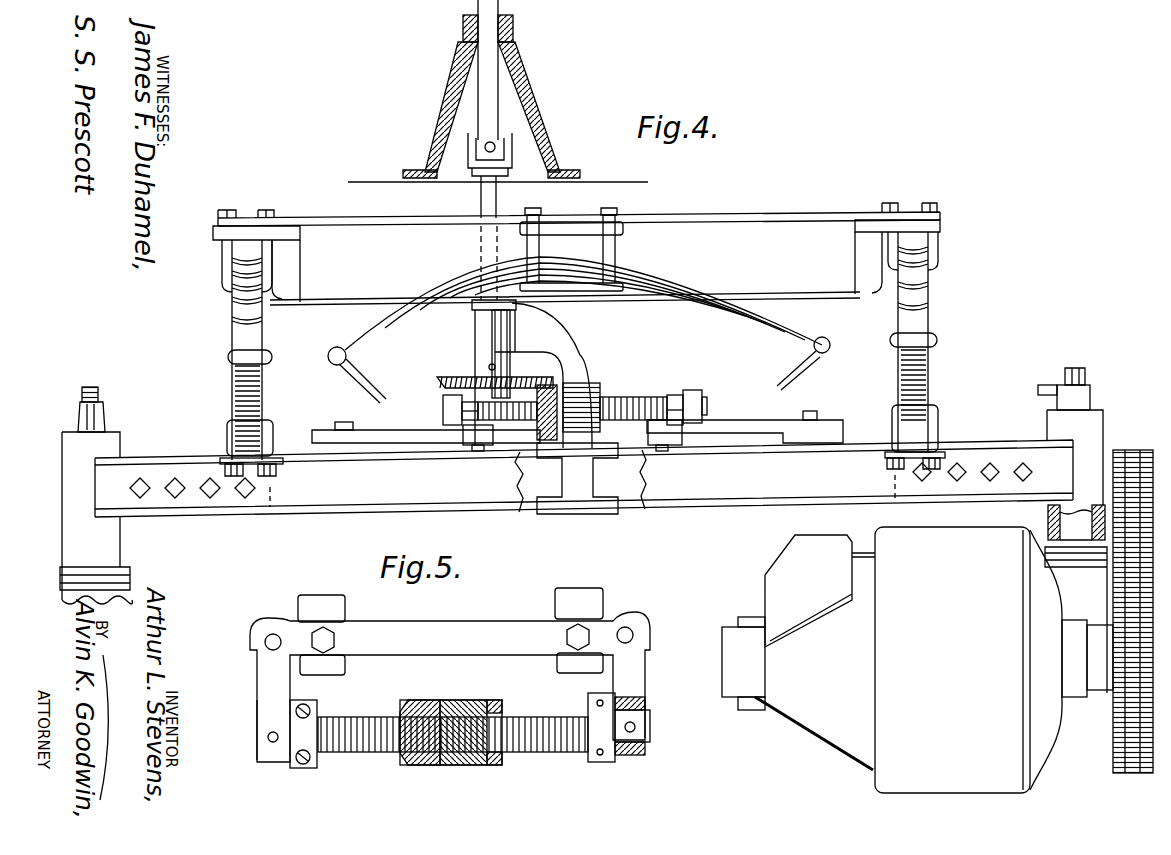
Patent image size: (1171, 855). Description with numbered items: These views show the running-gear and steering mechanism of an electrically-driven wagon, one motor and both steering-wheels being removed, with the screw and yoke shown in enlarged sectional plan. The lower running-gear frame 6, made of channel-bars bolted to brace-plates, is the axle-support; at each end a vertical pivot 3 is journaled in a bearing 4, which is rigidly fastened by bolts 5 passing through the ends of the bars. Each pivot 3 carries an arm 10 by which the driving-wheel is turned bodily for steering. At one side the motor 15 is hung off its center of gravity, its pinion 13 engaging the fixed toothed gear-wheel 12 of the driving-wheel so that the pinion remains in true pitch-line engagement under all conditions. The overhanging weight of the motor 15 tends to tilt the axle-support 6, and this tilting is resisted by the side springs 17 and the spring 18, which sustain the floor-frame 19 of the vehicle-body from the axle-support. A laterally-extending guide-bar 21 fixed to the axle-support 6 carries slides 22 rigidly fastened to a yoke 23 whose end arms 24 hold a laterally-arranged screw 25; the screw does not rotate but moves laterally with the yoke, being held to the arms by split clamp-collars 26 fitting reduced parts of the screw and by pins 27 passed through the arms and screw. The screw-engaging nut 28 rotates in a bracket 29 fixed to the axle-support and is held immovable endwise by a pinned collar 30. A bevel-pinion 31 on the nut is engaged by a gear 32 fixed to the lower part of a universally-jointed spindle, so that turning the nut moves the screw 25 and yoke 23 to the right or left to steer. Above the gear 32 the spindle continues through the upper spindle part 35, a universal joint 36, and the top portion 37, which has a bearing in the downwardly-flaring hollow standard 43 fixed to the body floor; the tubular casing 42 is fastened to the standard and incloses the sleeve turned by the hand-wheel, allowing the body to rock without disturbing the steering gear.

In FIG. 4, the vertical pivot 3 is at (79, 418).
In FIG. 4, the bearing 4 is at (62, 532).
In FIG. 4, the bolts 5 is at (240, 492).
In FIG. 4, the lower running-gear frame 6 is at (584, 478).
In FIG. 4, the arm 10 is at (1064, 388).
In FIG. 4, the toothed gear-wheel 12 is at (1133, 599).
In FIG. 4, the pinion 13 is at (1127, 673).
In FIG. 4, the motor 15 is at (872, 772).
In FIG. 4, the side springs 17 is at (233, 334).
In FIG. 4, the spring 18 is at (664, 272).
In FIG. 4, the floor-frame 19 is at (382, 236).
In FIG. 4, the guide-bar 21 is at (734, 427).
In FIG. 4, the slides 22 is at (483, 432).
In FIG. 5, the slides 22 is at (313, 600).
In FIG. 5, the yoke 23 is at (497, 630).
In FIG. 4, the end arms 24 is at (447, 403).
In FIG. 5, the end arms 24 is at (265, 685).
In FIG. 4, the screw 25 is at (630, 401).
In FIG. 5, the screw 25 is at (535, 748).
In FIG. 4, the split clamp-collars 26 is at (470, 420).
In FIG. 5, the split clamp-collars 26 is at (300, 764).
In FIG. 5, the pins 27 is at (270, 740).
In FIG. 5, the nut 28 is at (470, 764).
In FIG. 4, the bracket 29 is at (563, 344).
In FIG. 5, the bracket 29 is at (455, 697).
In FIG. 4, the pinned collar 30 is at (600, 393).
In FIG. 5, the pinned collar 30 is at (497, 706).
In FIG. 4, the bevel-pinion 31 is at (540, 442).
In FIG. 5, the bevel-pinion 31 is at (412, 702).
In FIG. 4, the gear 32 is at (466, 377).
In FIG. 4, the upper spindle part 35 is at (481, 196).
In FIG. 4, the universal joint 36 is at (470, 150).
In FIG. 4, the top portion of the spindle 37 is at (486, 86).
In FIG. 4, the tubular casing 42 is at (464, 21).
In FIG. 4, the hollow standard 43 is at (536, 106).